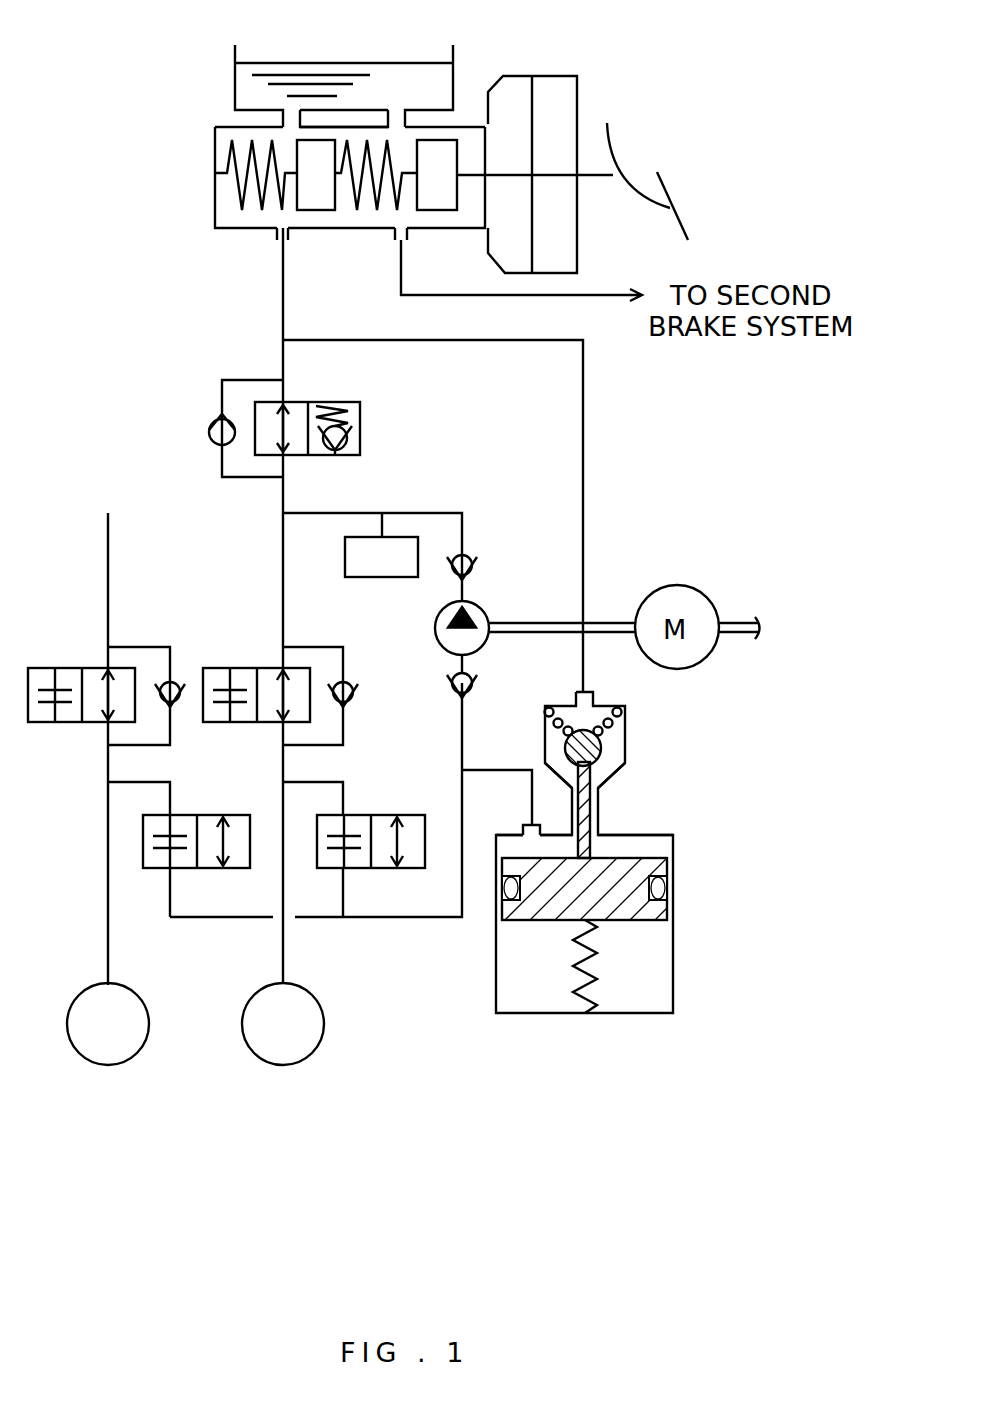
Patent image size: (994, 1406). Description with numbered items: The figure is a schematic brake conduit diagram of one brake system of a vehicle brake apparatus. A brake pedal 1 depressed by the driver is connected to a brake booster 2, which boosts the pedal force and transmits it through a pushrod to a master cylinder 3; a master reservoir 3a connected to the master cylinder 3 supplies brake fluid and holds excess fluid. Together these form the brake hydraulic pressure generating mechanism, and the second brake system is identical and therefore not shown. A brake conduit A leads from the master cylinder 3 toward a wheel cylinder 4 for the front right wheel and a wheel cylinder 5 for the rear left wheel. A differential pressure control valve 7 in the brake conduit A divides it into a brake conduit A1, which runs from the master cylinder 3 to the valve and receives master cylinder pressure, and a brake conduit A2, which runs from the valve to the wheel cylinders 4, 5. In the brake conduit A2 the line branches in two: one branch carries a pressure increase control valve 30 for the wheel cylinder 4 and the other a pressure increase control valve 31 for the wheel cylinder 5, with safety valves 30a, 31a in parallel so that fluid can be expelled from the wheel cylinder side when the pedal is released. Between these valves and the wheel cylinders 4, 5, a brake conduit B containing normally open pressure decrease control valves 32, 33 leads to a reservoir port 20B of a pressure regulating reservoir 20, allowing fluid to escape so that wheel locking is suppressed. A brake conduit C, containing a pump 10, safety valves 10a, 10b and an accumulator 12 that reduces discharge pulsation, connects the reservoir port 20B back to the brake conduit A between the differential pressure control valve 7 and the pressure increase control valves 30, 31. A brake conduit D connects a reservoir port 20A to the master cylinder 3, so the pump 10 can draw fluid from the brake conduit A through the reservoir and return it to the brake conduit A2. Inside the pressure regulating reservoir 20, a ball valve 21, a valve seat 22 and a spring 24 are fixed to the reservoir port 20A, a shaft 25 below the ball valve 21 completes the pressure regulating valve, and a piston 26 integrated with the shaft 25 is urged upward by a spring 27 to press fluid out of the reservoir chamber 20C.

The brake pedal 1 is at (613, 128).
The brake booster 2 is at (553, 76).
The master cylinder 3 is at (203, 203).
The master reservoir 3a is at (331, 63).
The wheel cylinder 4 is at (67, 1024).
The wheel cylinder 5 is at (242, 1024).
The differential pressure control valve 7 is at (360, 422).
The pump 10 is at (488, 606).
The safety valve 10a is at (478, 563).
The safety valve 10b is at (478, 680).
The accumulator 12 is at (345, 550).
The pressure regulating reservoir 20 is at (613, 870).
The reservoir port 20A is at (592, 693).
The reservoir port 20B is at (528, 826).
The reservoir chamber 20C is at (632, 850).
The ball valve 21 is at (600, 748).
The valve seat 22 is at (613, 776).
The spring 24 is at (620, 712).
The shaft 25 is at (590, 802).
The piston 26 is at (625, 910).
The spring 27 is at (590, 975).
The pressure increase control valve 30 is at (72, 668).
The safety valve 30a is at (172, 680).
The pressure increase control valve 31 is at (245, 668).
The safety valve 31a is at (345, 680).
The pressure decrease control valve 32 is at (237, 815).
The pressure decrease control valve 33 is at (412, 815).
The brake conduit A is at (271, 288).
The brake conduit A1 is at (283, 360).
The brake conduit A2 is at (108, 548).
The brake conduit B is at (237, 917).
The brake conduit C is at (418, 513).
The brake conduit D is at (583, 487).